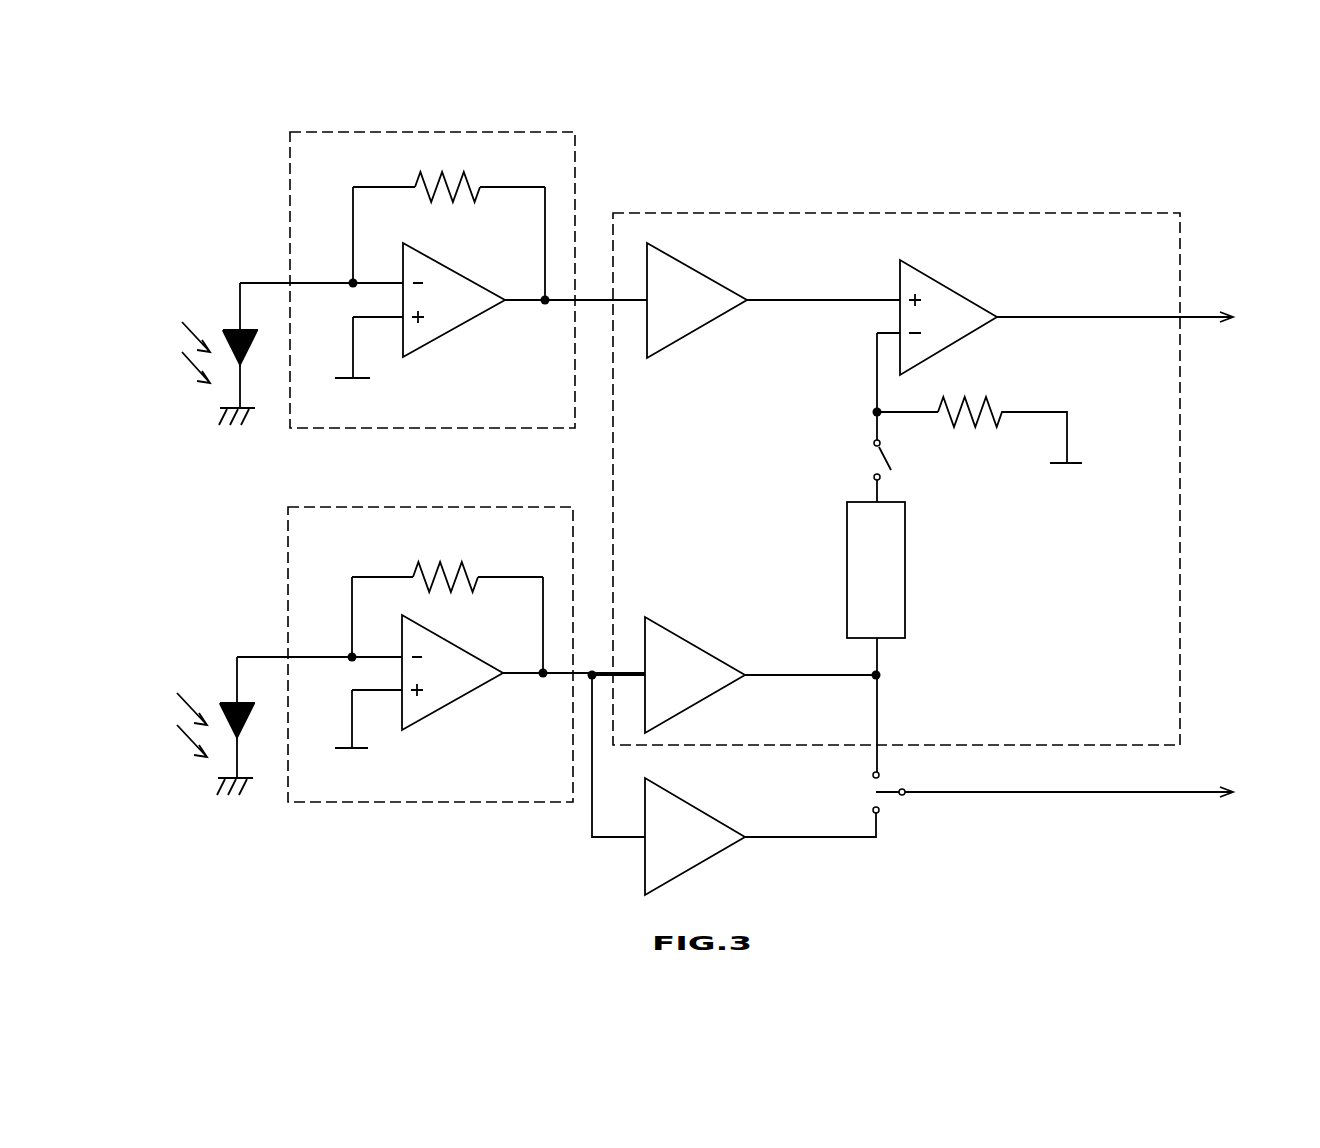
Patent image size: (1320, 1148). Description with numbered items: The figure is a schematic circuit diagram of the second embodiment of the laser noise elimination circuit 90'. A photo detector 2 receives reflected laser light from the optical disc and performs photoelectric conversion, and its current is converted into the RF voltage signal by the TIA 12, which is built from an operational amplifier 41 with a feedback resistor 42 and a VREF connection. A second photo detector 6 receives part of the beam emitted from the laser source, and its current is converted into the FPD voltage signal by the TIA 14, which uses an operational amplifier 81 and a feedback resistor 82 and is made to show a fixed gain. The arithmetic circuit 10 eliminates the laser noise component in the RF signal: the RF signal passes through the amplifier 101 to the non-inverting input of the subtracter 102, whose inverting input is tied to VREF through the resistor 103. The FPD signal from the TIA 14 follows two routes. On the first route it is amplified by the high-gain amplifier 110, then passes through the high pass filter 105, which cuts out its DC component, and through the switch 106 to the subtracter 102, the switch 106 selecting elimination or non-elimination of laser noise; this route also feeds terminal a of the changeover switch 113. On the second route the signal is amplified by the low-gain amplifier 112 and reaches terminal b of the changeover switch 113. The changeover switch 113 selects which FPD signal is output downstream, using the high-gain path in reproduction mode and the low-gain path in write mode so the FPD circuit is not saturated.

The photo detector 2 is at (182, 383).
The photo detector 6 is at (208, 757).
The TIA 12 is at (345, 132).
The TIA 14 is at (340, 802).
The operational amplifier 41 is at (460, 272).
The feedback resistor 42 is at (450, 175).
The operational amplifier 81 is at (458, 645).
The feedback resistor 82 is at (448, 573).
The laser noise elimination circuit 90' is at (937, 474).
The arithmetic circuit 10 is at (808, 213).
The amplifier 101 is at (703, 270).
The subtracter 102 is at (957, 288).
The resistor 103 is at (970, 405).
The high pass filter 105 is at (905, 547).
The switch 106 is at (873, 461).
The amplifier 110 is at (703, 642).
The amplifier 112 is at (703, 808).
The changeover switch 113 is at (885, 798).